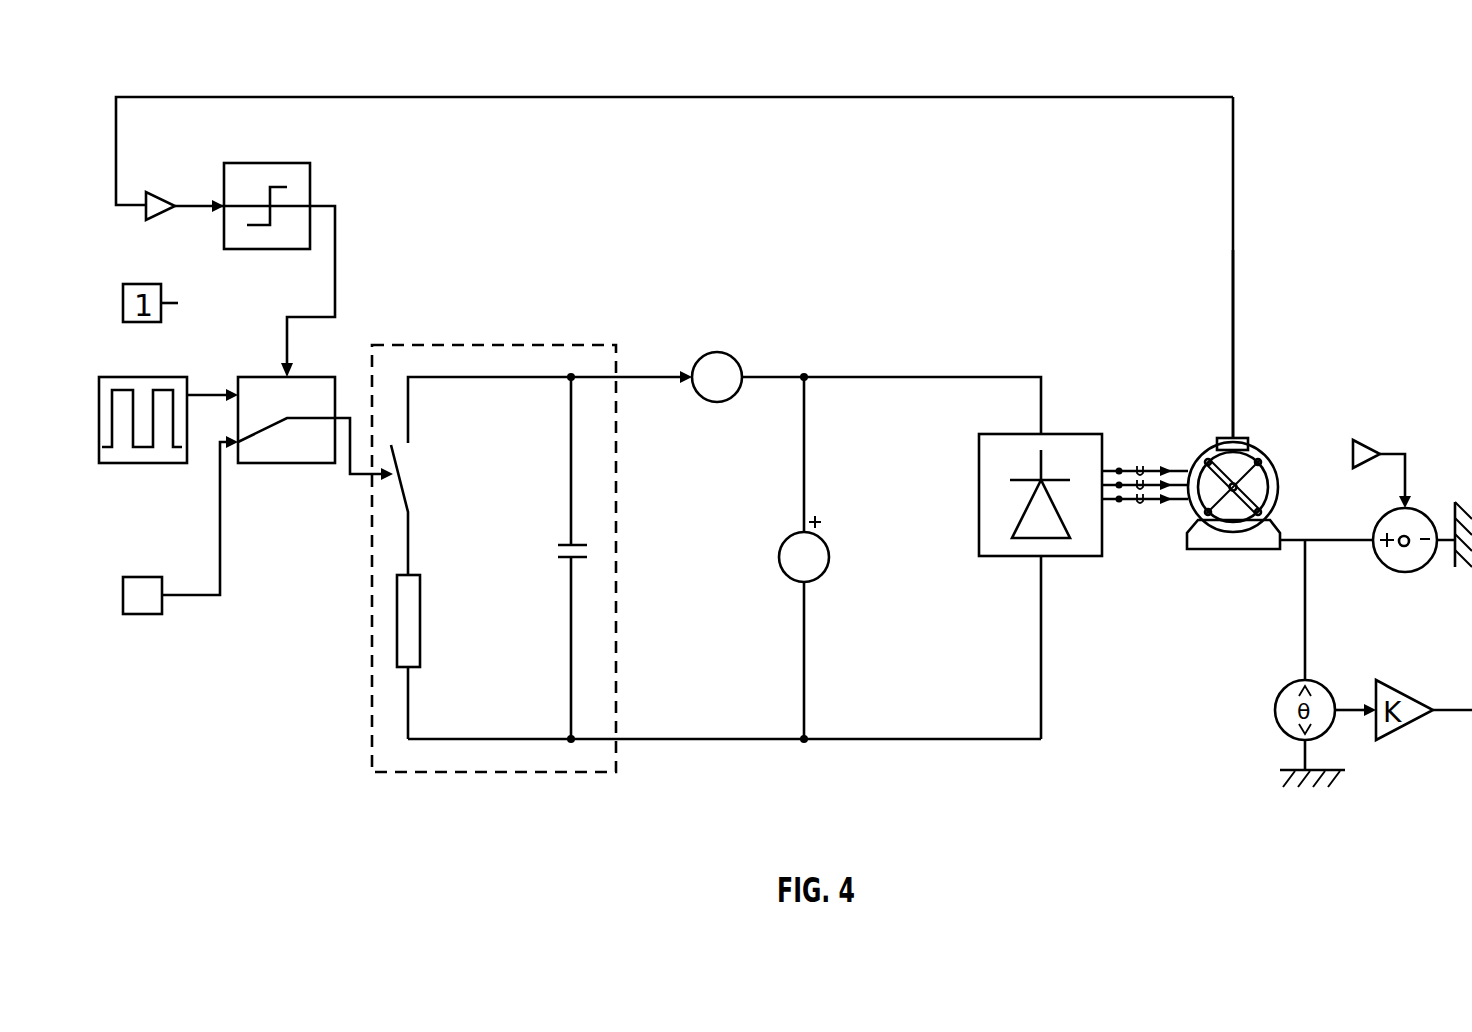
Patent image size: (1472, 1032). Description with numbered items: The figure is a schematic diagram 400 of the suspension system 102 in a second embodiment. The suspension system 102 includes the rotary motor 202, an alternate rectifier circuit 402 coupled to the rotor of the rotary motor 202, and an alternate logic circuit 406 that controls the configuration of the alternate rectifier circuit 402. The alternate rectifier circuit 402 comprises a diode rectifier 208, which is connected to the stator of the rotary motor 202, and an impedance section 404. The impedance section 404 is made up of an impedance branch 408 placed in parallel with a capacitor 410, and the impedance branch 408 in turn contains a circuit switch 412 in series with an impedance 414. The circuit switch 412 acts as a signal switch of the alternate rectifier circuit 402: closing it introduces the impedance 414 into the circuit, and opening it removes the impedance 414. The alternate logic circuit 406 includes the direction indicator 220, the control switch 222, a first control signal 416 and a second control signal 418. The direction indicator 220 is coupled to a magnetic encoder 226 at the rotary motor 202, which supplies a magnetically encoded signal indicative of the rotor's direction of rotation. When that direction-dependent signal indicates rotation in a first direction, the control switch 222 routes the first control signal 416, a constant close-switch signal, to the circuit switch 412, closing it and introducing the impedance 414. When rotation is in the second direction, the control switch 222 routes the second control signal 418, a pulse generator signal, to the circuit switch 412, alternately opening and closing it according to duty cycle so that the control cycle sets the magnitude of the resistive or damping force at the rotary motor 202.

The schematic diagram 400 is at (1274, 106).
The suspension system 102 is at (1246, 258).
The alternate logic circuit 406 is at (201, 78).
The direction indicator 220 is at (246, 175).
The second control signal 418 is at (172, 377).
The control switch 222 is at (272, 377).
The first control signal 416 is at (143, 616).
The impedance section 404 is at (530, 345).
The impedance branch 408 is at (444, 352).
The circuit switch 412 is at (403, 494).
The impedance 414 is at (397, 625).
The capacitor 410 is at (590, 551).
The alternate rectifier circuit 402 is at (793, 348).
The diode rectifier 208 is at (1060, 440).
The rotary motor 202 is at (1258, 455).
The magnetic encoder 226 is at (1222, 438).